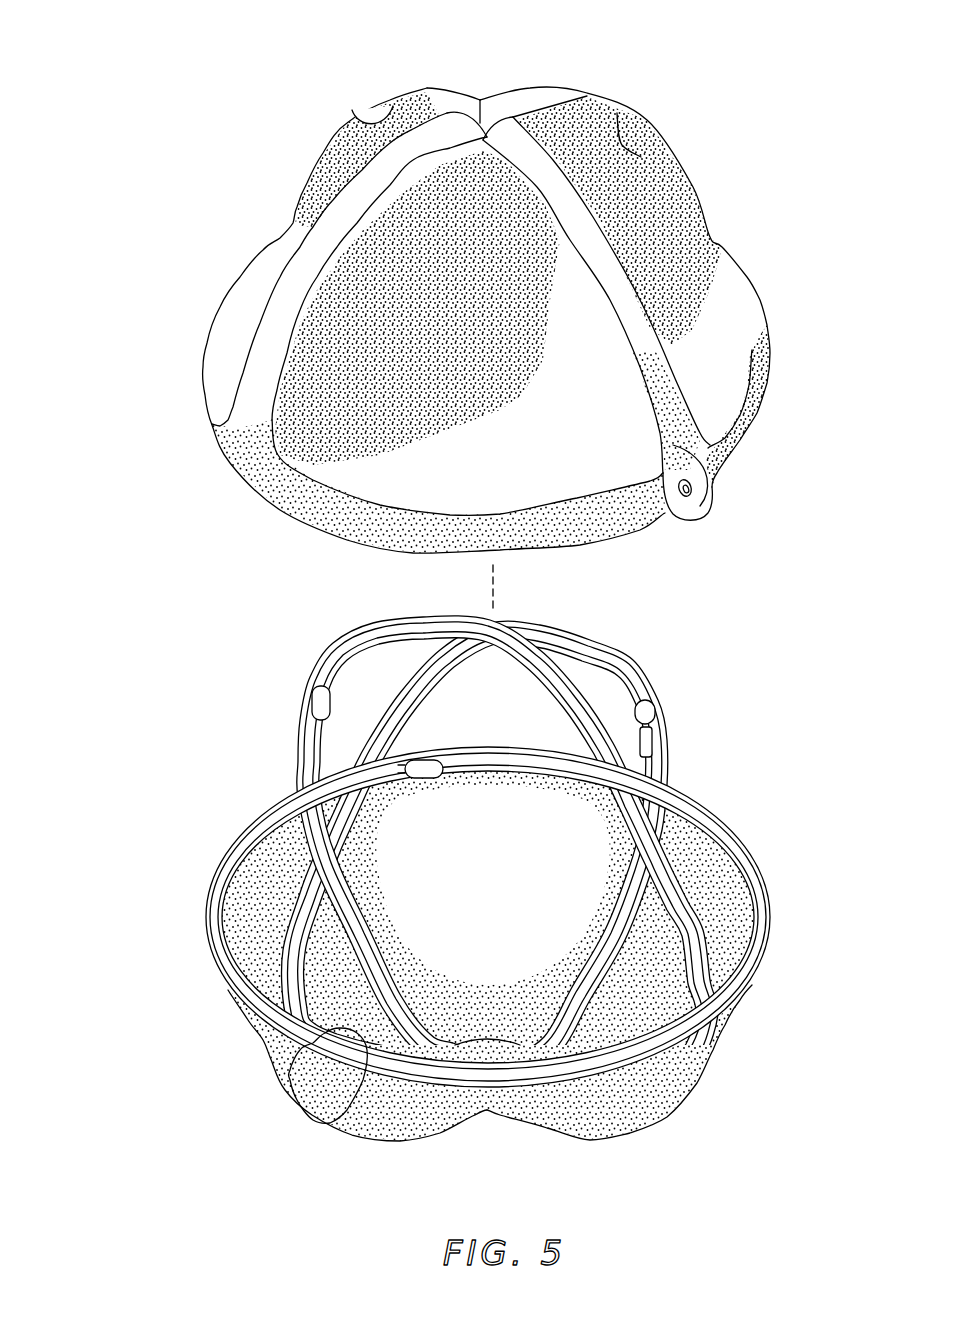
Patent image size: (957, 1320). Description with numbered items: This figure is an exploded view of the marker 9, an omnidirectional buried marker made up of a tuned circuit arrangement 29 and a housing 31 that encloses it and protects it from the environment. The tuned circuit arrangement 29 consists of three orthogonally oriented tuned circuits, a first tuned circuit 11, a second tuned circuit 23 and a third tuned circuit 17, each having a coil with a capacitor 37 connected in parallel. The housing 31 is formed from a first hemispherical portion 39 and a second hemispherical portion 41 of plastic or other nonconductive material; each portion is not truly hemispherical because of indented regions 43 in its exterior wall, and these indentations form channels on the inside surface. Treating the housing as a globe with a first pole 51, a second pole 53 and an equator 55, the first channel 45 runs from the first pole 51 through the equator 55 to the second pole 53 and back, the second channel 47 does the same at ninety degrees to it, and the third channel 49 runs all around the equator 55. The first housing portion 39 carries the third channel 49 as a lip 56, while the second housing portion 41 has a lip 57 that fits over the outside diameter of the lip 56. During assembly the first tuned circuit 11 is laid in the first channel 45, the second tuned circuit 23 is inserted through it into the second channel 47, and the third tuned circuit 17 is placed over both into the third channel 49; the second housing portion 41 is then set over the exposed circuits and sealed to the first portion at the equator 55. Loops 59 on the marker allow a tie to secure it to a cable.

The marker 9 is at (268, 102).
The first tuned circuit 11 is at (627, 651).
The third tuned circuit 17 is at (350, 1095).
The second tuned circuit 23 is at (713, 960).
The tuned circuit arrangement 29 is at (682, 690).
The housing 31 is at (768, 360).
The capacitor 37 is at (650, 721).
The first hemispherical portion 39 is at (634, 1120).
The second hemispherical portion 41 is at (762, 290).
The indented regions 43 is at (580, 447).
The first channel 45 is at (655, 150).
The second channel 47 is at (356, 110).
The third channel 49 is at (260, 1042).
The first pole 51 is at (481, 98).
The second pole 53 is at (487, 1122).
The equator 55 is at (211, 907).
The first housing portion lip 56 is at (230, 990).
The lip 57 is at (313, 497).
The loops 59 is at (707, 510).